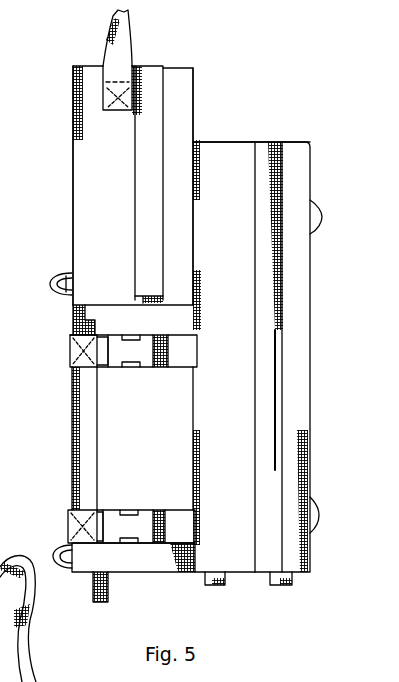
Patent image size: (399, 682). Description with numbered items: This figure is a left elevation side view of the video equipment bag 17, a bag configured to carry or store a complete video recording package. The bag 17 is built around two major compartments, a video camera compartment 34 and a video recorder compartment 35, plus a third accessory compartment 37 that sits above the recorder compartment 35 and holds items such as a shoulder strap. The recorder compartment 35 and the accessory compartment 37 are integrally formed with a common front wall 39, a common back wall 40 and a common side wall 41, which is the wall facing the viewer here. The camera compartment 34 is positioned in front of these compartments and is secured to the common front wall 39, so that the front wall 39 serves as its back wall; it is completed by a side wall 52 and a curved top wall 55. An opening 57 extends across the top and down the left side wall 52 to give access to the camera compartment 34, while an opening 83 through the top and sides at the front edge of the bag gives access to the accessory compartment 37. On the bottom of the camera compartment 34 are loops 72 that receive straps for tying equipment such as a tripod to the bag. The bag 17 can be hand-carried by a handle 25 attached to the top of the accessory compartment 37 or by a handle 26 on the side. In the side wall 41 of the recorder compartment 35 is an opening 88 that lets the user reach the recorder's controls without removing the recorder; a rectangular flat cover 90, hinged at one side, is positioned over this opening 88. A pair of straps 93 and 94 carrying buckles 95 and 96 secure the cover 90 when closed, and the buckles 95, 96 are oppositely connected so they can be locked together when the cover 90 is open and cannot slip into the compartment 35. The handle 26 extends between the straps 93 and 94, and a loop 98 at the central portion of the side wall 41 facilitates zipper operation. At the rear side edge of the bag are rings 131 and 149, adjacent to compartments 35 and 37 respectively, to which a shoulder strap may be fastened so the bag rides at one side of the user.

The video equipment bag 17 is at (236, 64).
The handle 25 is at (113, 27).
The handle 26 is at (80, 430).
The video camera compartment 34 is at (290, 440).
The video recorder compartment 35 is at (133, 565).
The accessory compartment 37 is at (82, 176).
The common front wall 39 is at (193, 112).
The common back wall 40 is at (73, 242).
The side wall 41 is at (92, 209).
The side wall 52 is at (237, 310).
The curved top wall 55 is at (240, 142).
The opening 57 is at (283, 178).
The loops 72 is at (275, 585).
The opening 83 is at (165, 89).
The opening 88 is at (70, 380).
The cover 90 is at (107, 452).
The strap 93 is at (183, 362).
The strap 94 is at (172, 520).
The buckle 95 is at (143, 358).
The buckle 96 is at (127, 520).
The loop 98 is at (144, 298).
The ring 131 is at (58, 548).
The ring 149 is at (37, 295).